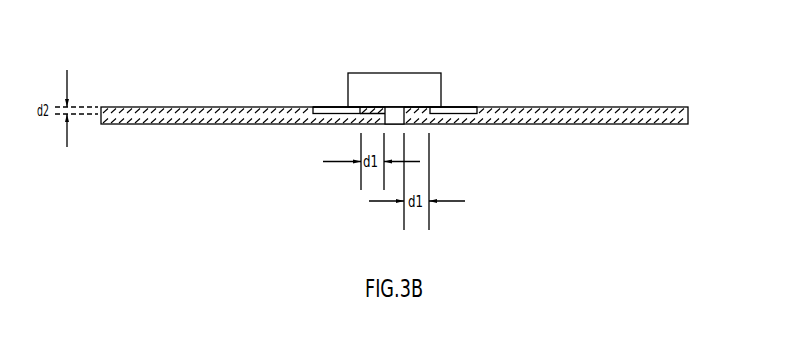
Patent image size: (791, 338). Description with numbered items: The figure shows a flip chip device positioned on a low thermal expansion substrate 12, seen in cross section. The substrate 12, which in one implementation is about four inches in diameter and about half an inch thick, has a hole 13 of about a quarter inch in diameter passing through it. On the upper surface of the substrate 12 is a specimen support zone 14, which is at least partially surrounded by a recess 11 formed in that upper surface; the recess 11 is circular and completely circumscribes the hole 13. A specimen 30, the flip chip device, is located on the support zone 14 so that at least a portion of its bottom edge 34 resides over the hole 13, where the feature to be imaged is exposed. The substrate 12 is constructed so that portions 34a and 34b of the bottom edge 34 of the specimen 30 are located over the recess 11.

The recess 11 is at (322, 109).
The low thermal expansion substrate 12 is at (660, 125).
The hole 13 is at (392, 115).
The specimen support zone 14 is at (430, 111).
The specimen 30 is at (427, 73).
The bottom edge 34 is at (373, 107).
The portion of the bottom edge 34a is at (352, 107).
The portion of the bottom edge 34b is at (436, 107).